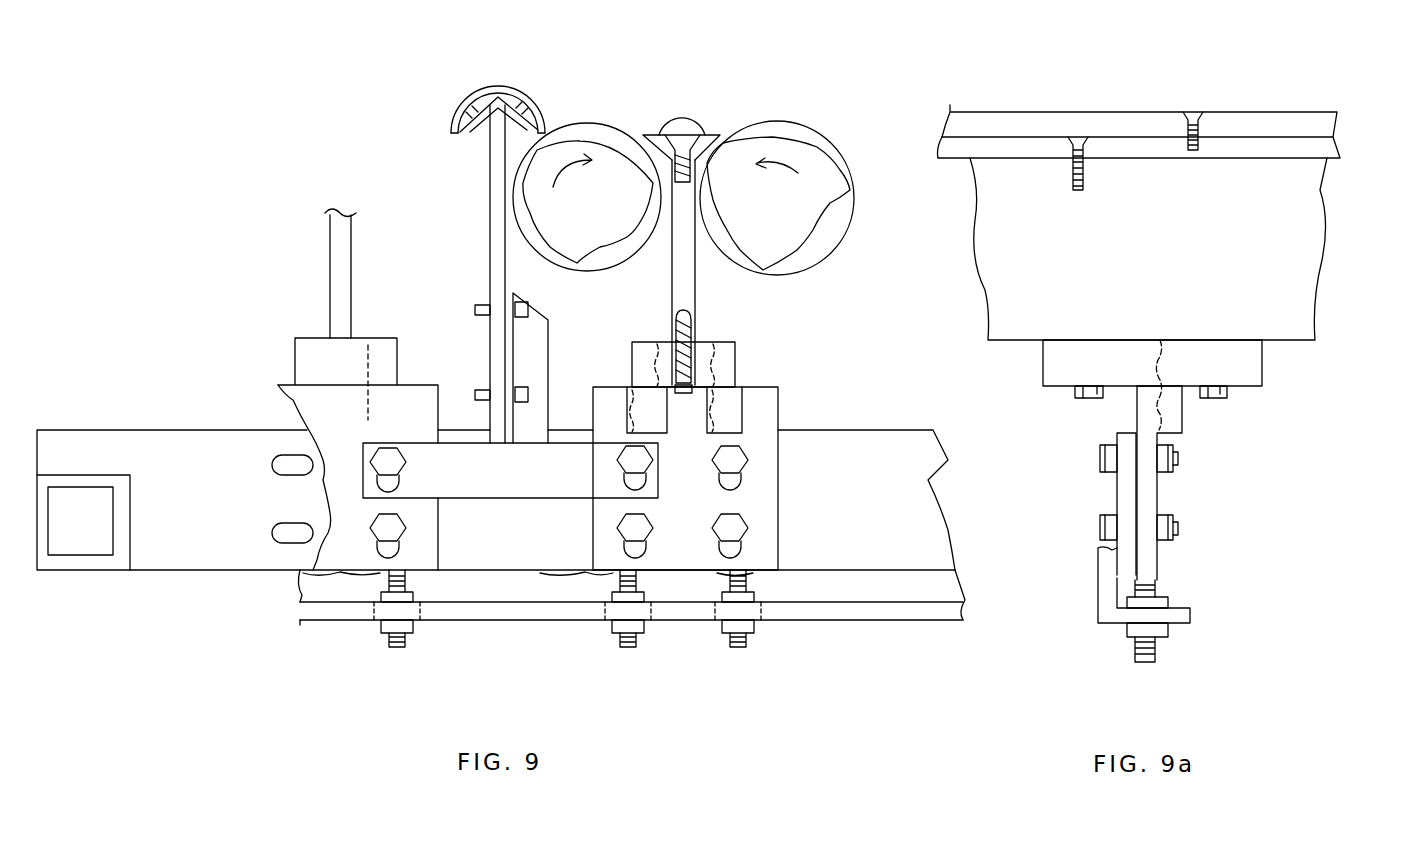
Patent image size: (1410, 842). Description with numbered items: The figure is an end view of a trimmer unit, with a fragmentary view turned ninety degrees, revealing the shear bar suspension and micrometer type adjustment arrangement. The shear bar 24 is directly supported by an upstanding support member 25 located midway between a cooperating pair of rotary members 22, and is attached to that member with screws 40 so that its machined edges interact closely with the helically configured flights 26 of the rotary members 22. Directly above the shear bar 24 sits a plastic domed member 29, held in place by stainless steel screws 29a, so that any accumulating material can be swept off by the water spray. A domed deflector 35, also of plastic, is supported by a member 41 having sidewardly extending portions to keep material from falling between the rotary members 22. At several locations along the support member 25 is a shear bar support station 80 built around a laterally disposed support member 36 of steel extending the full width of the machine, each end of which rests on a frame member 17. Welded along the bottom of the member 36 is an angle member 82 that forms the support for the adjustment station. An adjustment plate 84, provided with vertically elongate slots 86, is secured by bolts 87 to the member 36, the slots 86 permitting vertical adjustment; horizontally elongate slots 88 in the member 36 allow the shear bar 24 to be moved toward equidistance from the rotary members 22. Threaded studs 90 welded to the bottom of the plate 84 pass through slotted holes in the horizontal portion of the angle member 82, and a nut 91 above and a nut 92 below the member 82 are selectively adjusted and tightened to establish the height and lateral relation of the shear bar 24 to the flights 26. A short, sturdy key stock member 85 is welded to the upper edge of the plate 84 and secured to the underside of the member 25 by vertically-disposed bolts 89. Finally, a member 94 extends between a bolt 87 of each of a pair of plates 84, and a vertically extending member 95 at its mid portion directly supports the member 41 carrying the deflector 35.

In FIG. 9, the frame member 17 is at (77, 567).
In FIG. 9, the rotary member 22 is at (593, 143).
In FIG. 9, the shear bar 24 is at (711, 134).
In FIG. 9a, the shear bar 24 is at (1330, 150).
In FIG. 9, the upstanding support member 25 is at (340, 283).
In FIG. 9a, the upstanding support member 25 is at (1318, 272).
In FIG. 9, the helically configured flights 26 is at (840, 182).
In FIG. 9, the domed member 29 is at (684, 115).
In FIG. 9a, the domed member 29 is at (1305, 118).
In FIG. 9a, the stainless steel screw 29a is at (1193, 110).
In FIG. 9, the domed deflector 35 is at (512, 84).
In FIG. 9, the laterally disposed support member 36 is at (928, 522).
In FIG. 9a, the laterally disposed support member 36 is at (1117, 490).
In FIG. 9, the screw 40 is at (672, 228).
In FIG. 9a, the screw 40 is at (1070, 165).
In FIG. 9, the deflector support member 41 is at (490, 222).
In FIG. 9, the shear bar support station 80 is at (862, 309).
In FIG. 9, the angle member 82 is at (952, 596).
In FIG. 9a, the angle member 82 is at (1096, 595).
In FIG. 9, the adjustment plate 84 is at (778, 402).
In FIG. 9a, the adjustment plate 84 is at (1158, 490).
In FIG. 9, the key stock member 85 is at (703, 352).
In FIG. 9a, the key stock member 85 is at (1255, 365).
In FIG. 9, the vertically elongate slot 86 is at (740, 547).
In FIG. 9, the bolt 87 is at (742, 455).
In FIG. 9a, the bolt 87 is at (1100, 458).
In FIG. 9, the horizontally elongate slot 88 is at (293, 530).
In FIG. 9, the vertically-disposed bolt 89 is at (672, 370).
In FIG. 9a, the vertically-disposed bolt 89 is at (1088, 400).
In FIG. 9, the threaded stud 90 is at (732, 638).
In FIG. 9a, the threaded stud 90 is at (1146, 662).
In FIG. 9, the upper nut 91 is at (400, 598).
In FIG. 9a, the upper nut 91 is at (1165, 598).
In FIG. 9, the lower nut 92 is at (382, 628).
In FIG. 9a, the lower nut 92 is at (1168, 628).
In FIG. 9, the cross member 94 is at (503, 487).
In FIG. 9, the vertically extending member 95 is at (525, 350).